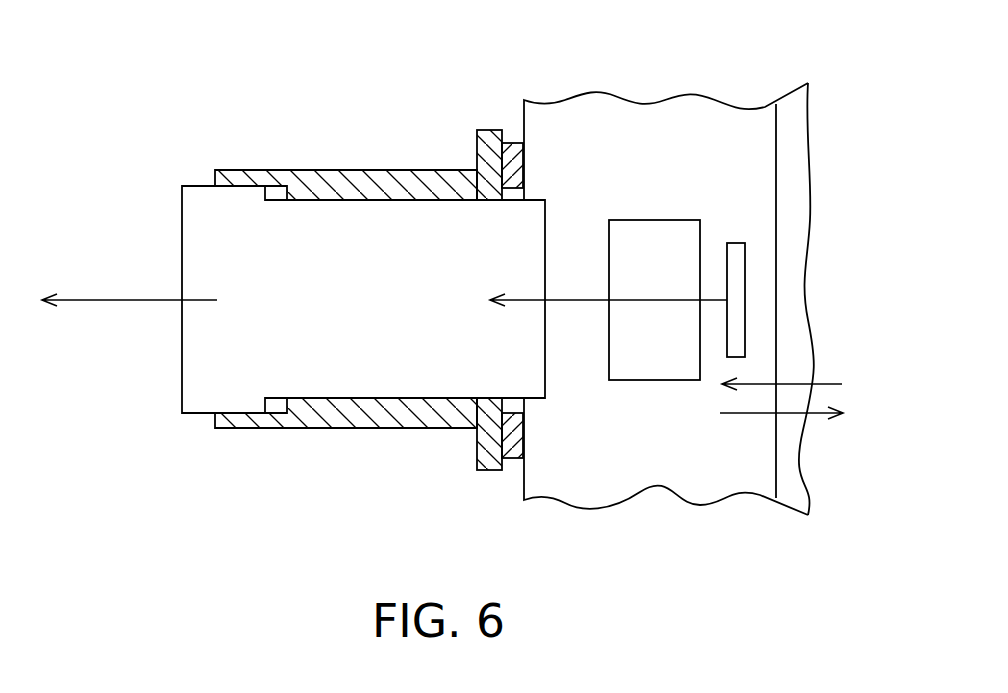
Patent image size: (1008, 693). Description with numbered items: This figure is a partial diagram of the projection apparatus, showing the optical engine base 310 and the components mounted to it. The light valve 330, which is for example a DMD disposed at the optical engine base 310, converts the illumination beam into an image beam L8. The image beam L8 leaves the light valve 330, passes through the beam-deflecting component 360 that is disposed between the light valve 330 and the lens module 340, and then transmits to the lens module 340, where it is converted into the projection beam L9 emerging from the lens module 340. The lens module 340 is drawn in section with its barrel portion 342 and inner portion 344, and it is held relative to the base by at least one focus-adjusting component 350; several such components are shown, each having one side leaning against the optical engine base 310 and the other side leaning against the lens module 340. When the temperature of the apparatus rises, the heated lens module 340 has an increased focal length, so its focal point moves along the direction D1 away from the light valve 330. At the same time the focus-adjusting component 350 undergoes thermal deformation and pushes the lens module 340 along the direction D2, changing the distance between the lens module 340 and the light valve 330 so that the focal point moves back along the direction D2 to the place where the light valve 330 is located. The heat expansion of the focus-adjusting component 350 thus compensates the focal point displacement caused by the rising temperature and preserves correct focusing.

The optical engine base 310 is at (730, 130).
The light valve 330 is at (735, 308).
The lens module 340 is at (318, 282).
The lens barrel 342 is at (247, 428).
The lens 344 is at (208, 378).
The focus-adjusting component 350 is at (515, 150).
The beam-deflecting component 360 is at (656, 236).
The image beam L8 is at (598, 305).
The projection beam L9 is at (89, 302).
The direction D1 is at (815, 418).
The direction D2 is at (832, 384).